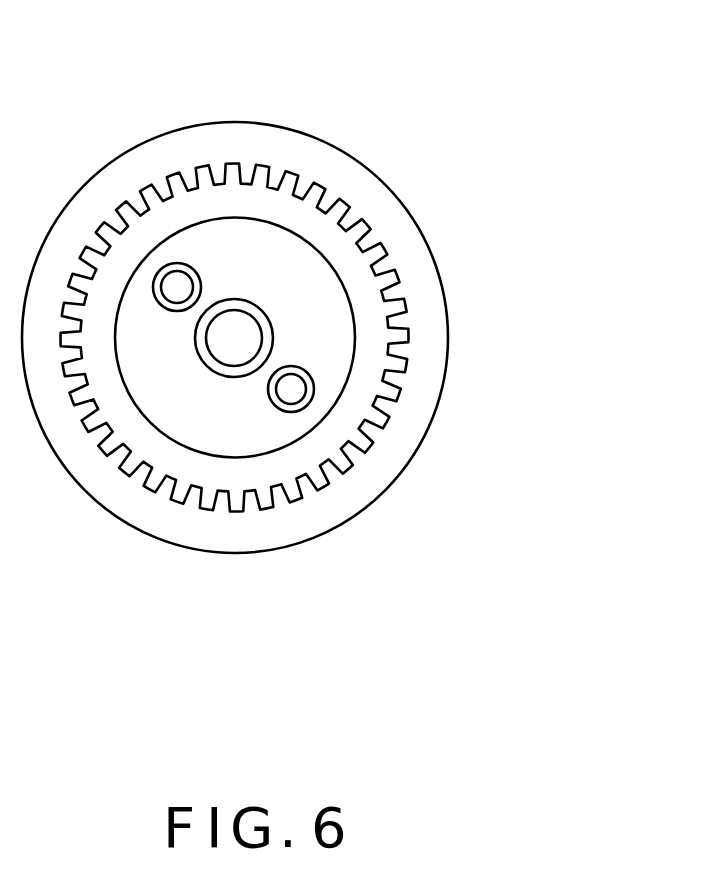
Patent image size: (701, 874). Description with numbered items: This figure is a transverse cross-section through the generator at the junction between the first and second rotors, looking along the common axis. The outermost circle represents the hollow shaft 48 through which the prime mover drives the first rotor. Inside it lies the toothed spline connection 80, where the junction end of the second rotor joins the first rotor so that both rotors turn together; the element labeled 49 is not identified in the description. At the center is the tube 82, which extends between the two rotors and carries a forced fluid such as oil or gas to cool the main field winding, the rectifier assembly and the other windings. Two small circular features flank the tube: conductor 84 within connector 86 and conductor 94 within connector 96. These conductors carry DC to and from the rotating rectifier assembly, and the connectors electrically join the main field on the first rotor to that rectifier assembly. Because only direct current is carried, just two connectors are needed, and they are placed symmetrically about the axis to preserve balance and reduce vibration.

The hollow shaft 48 is at (417, 263).
The hub disc 49 is at (312, 217).
The spline connection 80 is at (140, 212).
The tube 82 is at (222, 372).
The conductor 84 is at (293, 388).
The connector 86 is at (302, 413).
The conductor 94 is at (176, 282).
The connector 96 is at (193, 273).